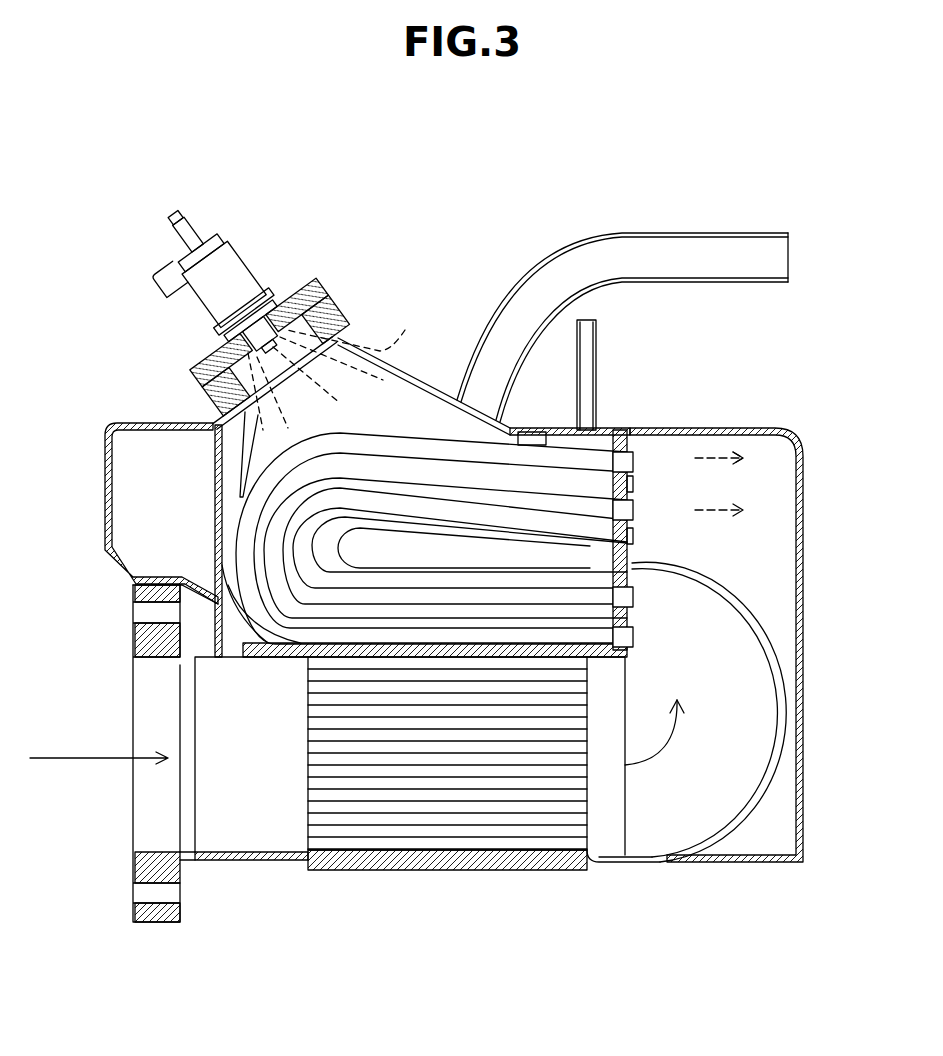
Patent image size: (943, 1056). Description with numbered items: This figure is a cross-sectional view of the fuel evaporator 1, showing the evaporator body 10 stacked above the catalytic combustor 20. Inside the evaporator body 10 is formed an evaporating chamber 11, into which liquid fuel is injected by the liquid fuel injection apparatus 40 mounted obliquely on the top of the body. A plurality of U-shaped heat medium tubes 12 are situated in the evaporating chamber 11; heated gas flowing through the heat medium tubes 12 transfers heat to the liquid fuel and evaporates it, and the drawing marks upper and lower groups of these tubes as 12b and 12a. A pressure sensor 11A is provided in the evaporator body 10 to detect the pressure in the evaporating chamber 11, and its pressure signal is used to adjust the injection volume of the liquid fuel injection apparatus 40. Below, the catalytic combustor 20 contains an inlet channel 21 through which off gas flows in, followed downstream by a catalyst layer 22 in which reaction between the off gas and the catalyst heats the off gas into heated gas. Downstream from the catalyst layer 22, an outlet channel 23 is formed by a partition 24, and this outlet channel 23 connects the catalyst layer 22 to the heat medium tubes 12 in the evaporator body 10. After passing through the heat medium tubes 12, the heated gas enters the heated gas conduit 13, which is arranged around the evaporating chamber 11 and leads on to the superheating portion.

The fuel evaporator 1 is at (633, 203).
The evaporator body 10 is at (450, 366).
The evaporating chamber 11 is at (233, 465).
The pressure sensor 11A is at (532, 436).
The heat medium tubes 12 is at (540, 460).
The lower coil section 12a is at (642, 575).
The upper coil section 12b is at (642, 453).
The heated gas conduit 13 is at (147, 443).
The catalytic combustor 20 is at (500, 885).
The inlet channel 21 is at (275, 833).
The catalyst layer 22 is at (470, 797).
The outlet channel 23 is at (688, 805).
The partition 24 is at (776, 736).
The liquid fuel injection apparatus 40 is at (248, 281).